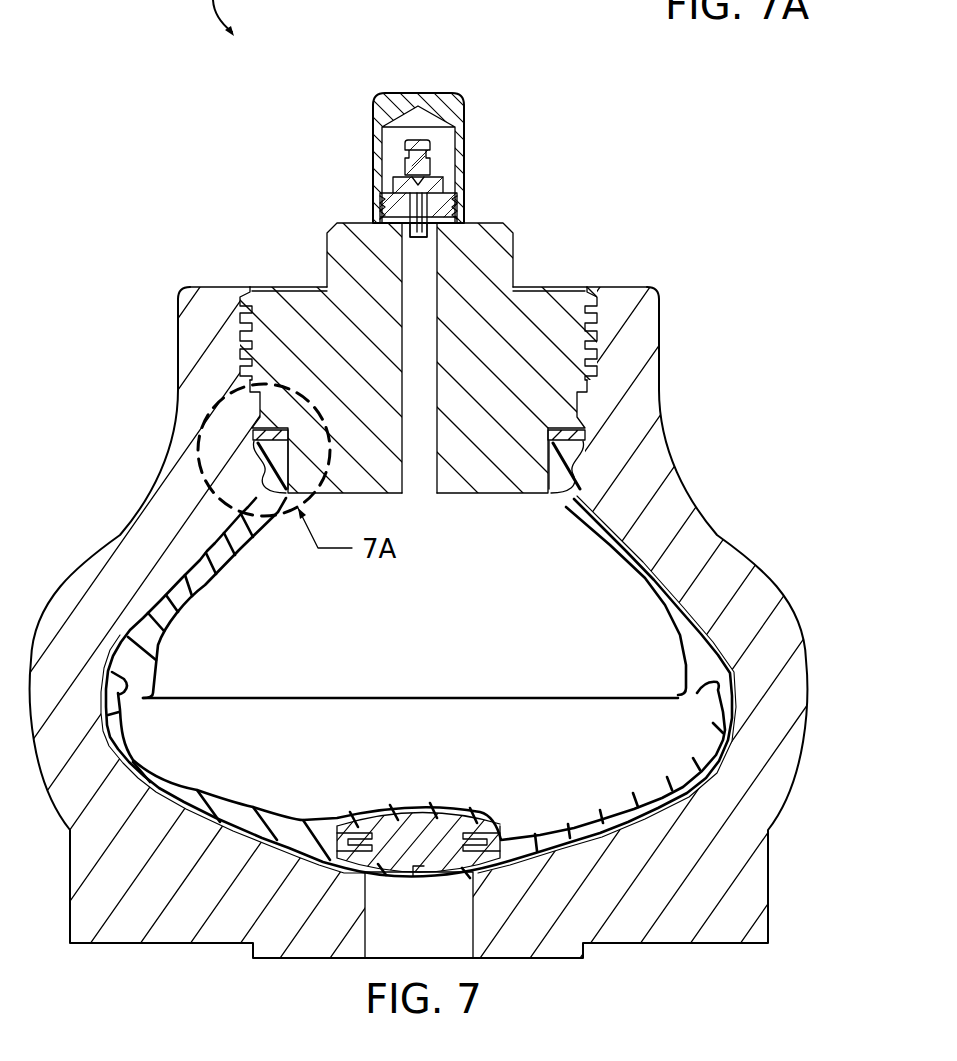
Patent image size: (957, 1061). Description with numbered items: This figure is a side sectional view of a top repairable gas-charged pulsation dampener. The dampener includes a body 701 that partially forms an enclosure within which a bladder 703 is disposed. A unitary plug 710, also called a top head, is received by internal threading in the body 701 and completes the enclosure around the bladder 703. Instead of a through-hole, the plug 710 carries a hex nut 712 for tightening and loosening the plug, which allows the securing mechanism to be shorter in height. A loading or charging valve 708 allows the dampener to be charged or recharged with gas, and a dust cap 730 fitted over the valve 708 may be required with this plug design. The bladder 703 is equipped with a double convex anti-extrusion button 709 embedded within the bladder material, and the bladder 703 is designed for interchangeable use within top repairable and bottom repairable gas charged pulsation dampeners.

The body 701 is at (797, 677).
The bladder 703 is at (687, 644).
The charging valve 708 is at (440, 182).
The anti-extrusion button 709 is at (398, 832).
The unitary plug 710 is at (298, 288).
The hex nut 712 is at (502, 263).
The dust cap 730 is at (405, 100).